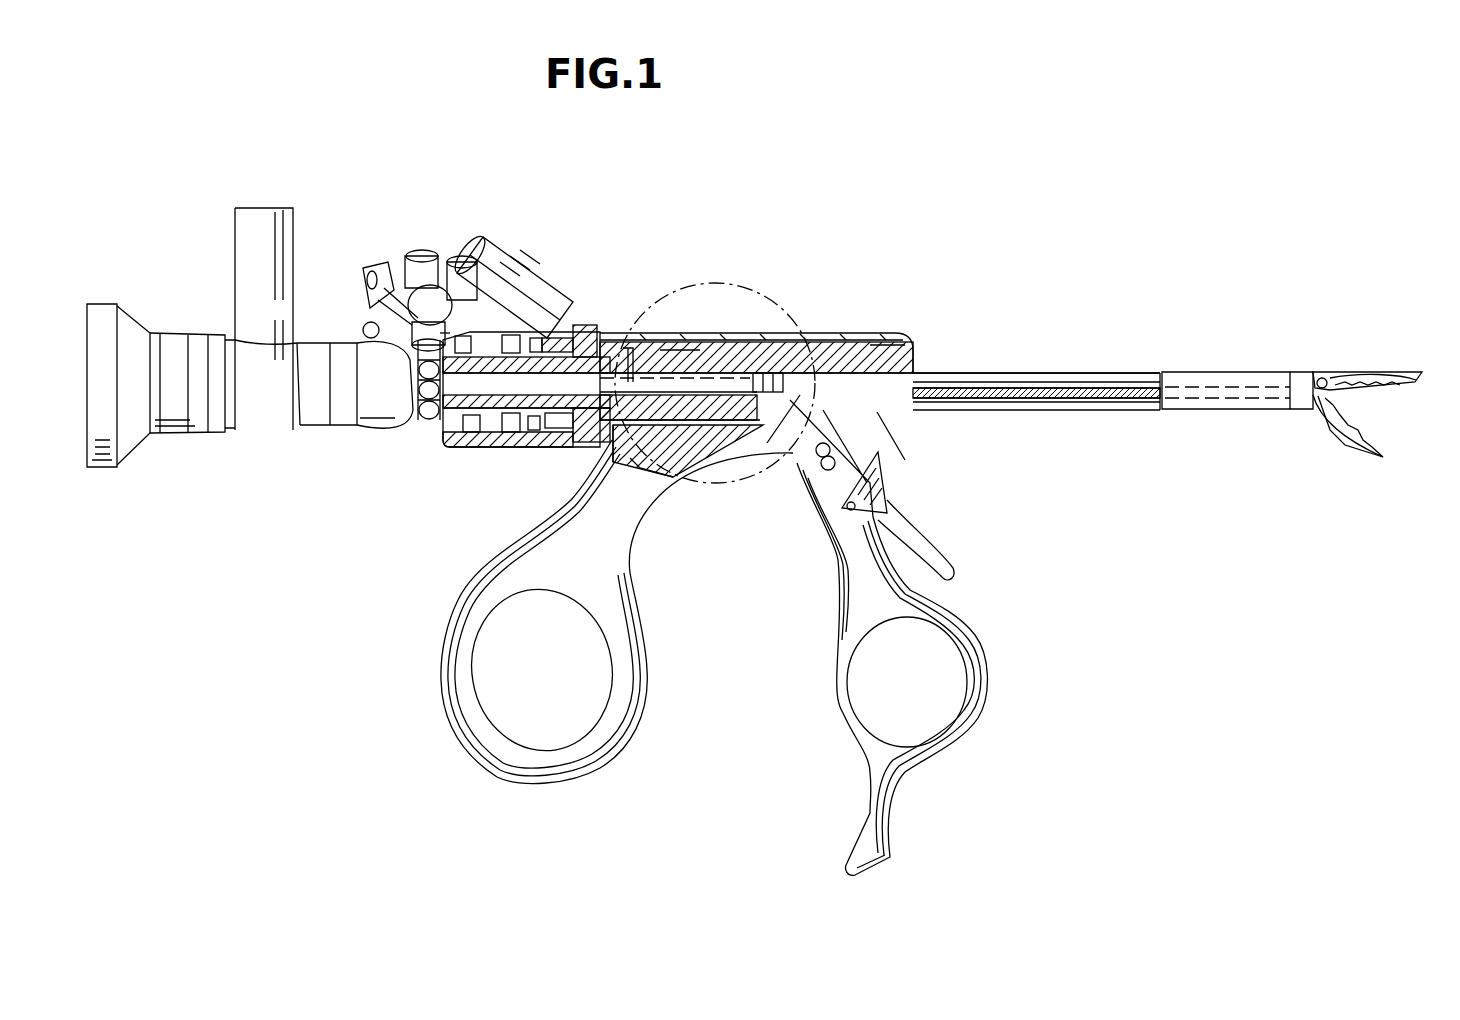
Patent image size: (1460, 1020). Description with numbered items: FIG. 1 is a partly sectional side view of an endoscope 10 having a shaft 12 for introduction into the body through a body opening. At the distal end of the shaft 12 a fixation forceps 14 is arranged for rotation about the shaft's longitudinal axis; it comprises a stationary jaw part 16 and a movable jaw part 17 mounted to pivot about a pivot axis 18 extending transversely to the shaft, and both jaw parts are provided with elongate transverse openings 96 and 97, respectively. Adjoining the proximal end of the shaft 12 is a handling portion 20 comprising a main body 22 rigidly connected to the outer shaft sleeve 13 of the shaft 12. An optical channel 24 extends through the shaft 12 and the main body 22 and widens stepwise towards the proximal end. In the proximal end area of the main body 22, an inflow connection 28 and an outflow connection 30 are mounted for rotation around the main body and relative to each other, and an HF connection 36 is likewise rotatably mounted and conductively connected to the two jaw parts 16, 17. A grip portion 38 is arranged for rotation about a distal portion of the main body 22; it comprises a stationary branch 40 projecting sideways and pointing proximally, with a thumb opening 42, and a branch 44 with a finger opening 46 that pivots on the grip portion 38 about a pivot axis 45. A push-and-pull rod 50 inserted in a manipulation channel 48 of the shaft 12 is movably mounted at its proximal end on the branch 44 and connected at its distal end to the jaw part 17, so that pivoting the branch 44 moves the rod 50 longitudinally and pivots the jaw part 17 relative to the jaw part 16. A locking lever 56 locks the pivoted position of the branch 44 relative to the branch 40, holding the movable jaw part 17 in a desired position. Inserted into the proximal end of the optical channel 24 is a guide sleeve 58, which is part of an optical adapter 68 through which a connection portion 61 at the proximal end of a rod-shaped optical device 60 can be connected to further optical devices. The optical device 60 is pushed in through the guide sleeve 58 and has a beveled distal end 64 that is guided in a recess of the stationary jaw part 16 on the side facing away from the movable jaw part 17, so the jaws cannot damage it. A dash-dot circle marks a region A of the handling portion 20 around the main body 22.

The endoscope 10 is at (748, 218).
The shaft 12 is at (1130, 372).
The outer shaft sleeve 13 is at (1025, 382).
The fixation forceps 14 is at (1325, 350).
The stationary jaw part 16 is at (1350, 372).
The jaw part 17 is at (1335, 420).
The pivot axis 18 is at (1320, 372).
The handling portion 20 is at (838, 332).
The main body 22 is at (890, 355).
The optical channel 24 is at (960, 372).
The inflow connection 28 is at (420, 252).
The outflow connection 30 is at (368, 265).
The HF connection 36 is at (498, 262).
The grip portion 38 is at (700, 332).
The stationary branch 40 is at (556, 611).
The thumb opening 42 is at (472, 680).
The branch 44 is at (931, 669).
The pivot axis 45 is at (805, 470).
The finger opening 46 is at (870, 710).
The manipulation channel 48 is at (1022, 410).
The push-and-pull rod 50 is at (1140, 412).
The locking lever 56 is at (952, 565).
The guide sleeve 58 is at (583, 383).
The optical device 60 is at (1070, 388).
The connection portion 61 is at (187, 318).
The end 64 is at (1425, 380).
The optical adapter 68 is at (337, 333).
The elongate transverse opening 96 is at (1390, 372).
The elongate transverse opening 97 is at (1370, 445).
The detail area A is at (715, 369).